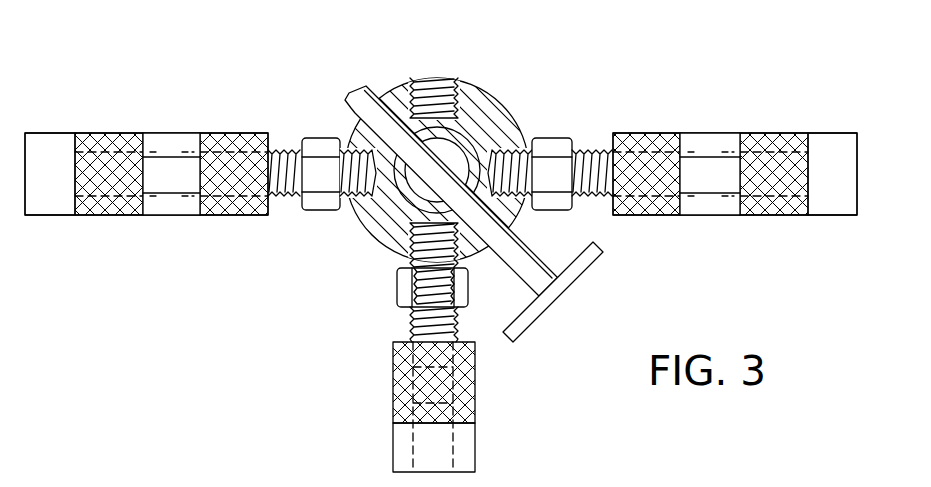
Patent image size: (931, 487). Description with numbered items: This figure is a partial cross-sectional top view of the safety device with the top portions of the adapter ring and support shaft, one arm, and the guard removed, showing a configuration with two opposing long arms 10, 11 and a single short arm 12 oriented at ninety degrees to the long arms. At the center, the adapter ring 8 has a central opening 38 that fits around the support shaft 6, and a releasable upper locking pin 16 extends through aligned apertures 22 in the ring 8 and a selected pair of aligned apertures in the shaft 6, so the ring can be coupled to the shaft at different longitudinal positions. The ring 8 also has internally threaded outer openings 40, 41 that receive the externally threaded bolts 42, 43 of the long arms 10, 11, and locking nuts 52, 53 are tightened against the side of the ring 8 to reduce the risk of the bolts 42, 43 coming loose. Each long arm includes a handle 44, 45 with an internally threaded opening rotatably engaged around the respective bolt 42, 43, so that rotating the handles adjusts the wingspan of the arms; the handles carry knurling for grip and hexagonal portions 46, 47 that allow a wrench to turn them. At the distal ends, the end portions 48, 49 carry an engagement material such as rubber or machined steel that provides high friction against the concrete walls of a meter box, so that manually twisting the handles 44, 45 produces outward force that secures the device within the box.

The long arm 10 is at (93, 101).
The long arm 11 is at (795, 105).
The short arm 12 is at (493, 443).
The upper locking pin 16 is at (548, 298).
The aligned apertures 22 is at (381, 100).
The central opening 38 is at (407, 97).
The adapter ring 8 is at (468, 98).
The support shaft 6 is at (463, 148).
The outer opening 40 is at (352, 180).
The outer opening 41 is at (527, 138).
The bolt 42 is at (285, 150).
The bolt 43 is at (590, 152).
The handle 44 is at (113, 200).
The handle 45 is at (772, 212).
The polygonal portion 46 is at (163, 205).
The polygonal portion 47 is at (713, 203).
The end portion 48 is at (45, 203).
The end portion 49 is at (836, 205).
The locking nut 52 is at (322, 140).
The locking nut 53 is at (547, 142).